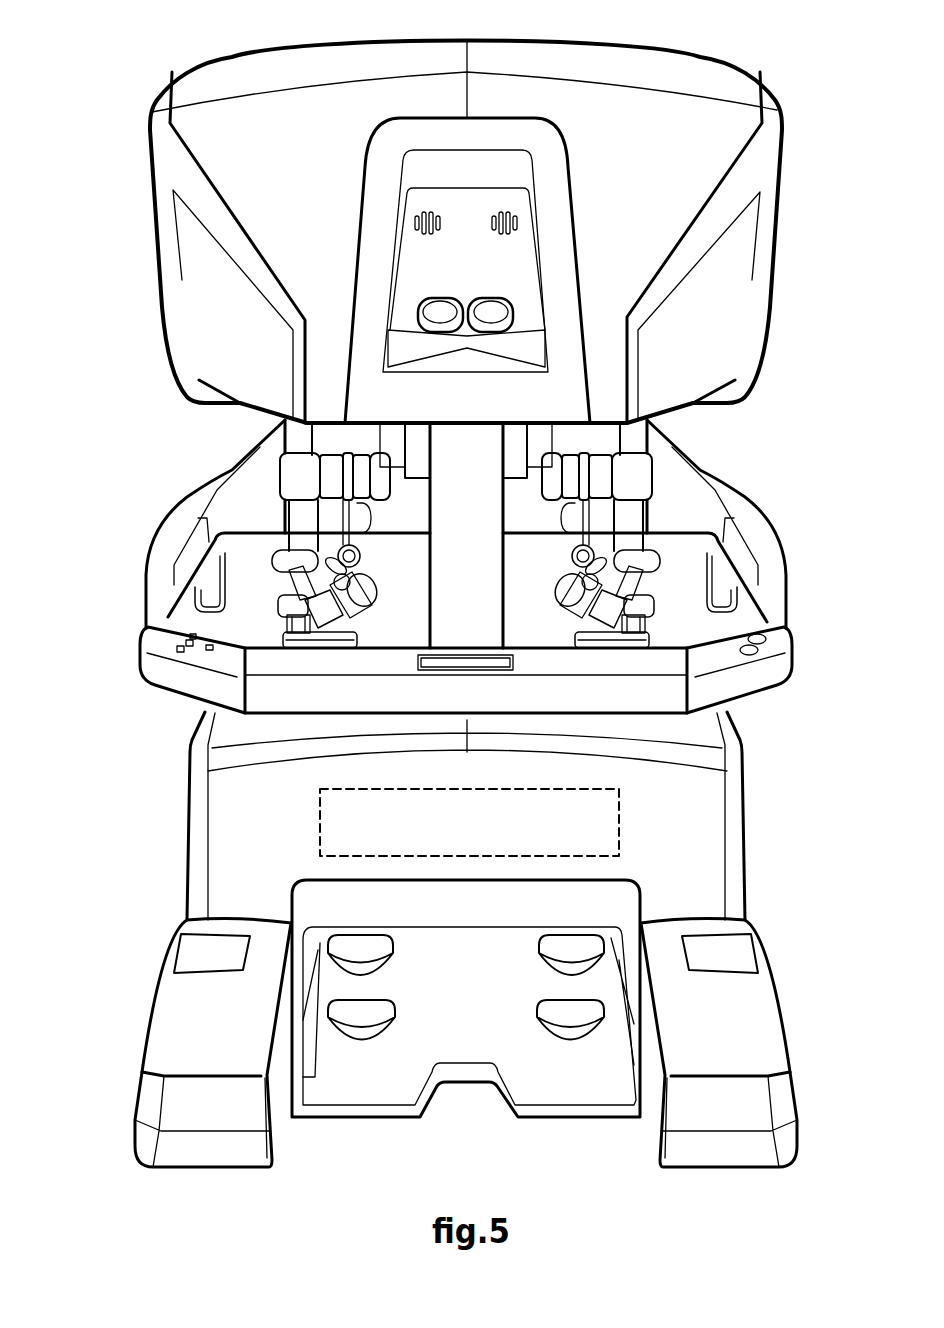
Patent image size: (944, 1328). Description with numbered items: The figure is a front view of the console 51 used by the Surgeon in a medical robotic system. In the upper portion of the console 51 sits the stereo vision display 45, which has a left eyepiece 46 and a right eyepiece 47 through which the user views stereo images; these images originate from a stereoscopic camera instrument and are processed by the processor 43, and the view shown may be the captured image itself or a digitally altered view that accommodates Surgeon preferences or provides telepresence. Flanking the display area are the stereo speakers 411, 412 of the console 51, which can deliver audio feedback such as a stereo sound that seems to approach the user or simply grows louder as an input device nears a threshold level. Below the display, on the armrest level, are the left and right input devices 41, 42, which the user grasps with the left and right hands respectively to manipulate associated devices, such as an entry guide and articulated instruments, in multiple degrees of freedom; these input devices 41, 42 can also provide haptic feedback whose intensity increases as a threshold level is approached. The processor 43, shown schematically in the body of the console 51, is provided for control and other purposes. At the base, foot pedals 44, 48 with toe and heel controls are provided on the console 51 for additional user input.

The console 51 is at (143, 52).
The stereo vision display 45 is at (405, 310).
The left eyepiece 46 is at (437, 308).
The right eyepiece 47 is at (482, 310).
The stereo speaker 411 is at (200, 540).
The stereo speaker 412 is at (737, 547).
The left input device 41 is at (370, 580).
The right input device 42 is at (562, 586).
The processor 43 is at (532, 791).
The foot pedal 48 is at (368, 950).
The foot pedal 44 is at (564, 950).